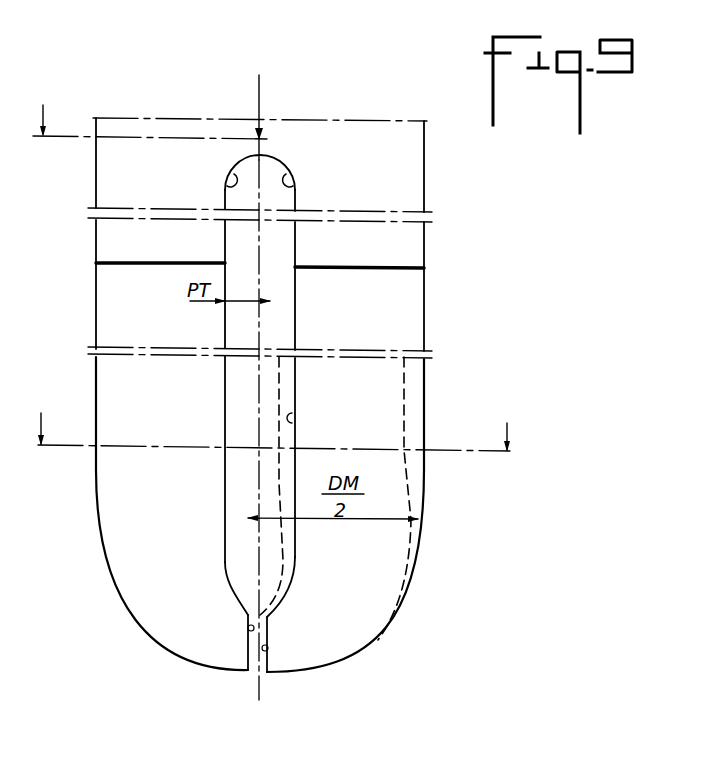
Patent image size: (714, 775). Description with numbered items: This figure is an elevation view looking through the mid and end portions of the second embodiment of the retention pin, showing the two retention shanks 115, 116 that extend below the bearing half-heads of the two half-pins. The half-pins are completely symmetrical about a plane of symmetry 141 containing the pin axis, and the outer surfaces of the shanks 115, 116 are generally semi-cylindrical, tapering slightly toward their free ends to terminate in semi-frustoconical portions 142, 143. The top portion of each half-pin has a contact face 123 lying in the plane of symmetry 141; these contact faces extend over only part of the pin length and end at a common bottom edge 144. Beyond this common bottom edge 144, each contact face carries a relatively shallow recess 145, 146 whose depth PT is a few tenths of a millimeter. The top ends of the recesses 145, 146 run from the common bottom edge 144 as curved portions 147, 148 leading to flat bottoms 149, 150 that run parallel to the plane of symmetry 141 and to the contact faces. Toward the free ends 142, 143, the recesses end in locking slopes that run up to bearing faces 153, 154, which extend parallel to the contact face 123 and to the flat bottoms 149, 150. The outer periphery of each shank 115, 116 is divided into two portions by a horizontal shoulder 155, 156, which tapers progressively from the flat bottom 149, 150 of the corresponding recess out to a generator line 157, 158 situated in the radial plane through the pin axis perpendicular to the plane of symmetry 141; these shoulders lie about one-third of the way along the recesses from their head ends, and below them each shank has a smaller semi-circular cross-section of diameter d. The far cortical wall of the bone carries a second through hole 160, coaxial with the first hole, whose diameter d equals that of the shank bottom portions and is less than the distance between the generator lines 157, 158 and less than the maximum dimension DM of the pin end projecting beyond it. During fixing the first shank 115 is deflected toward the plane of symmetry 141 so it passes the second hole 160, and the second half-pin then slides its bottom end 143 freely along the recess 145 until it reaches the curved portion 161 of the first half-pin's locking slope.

The retention shank 115 is at (112, 169).
The retention shank 116 is at (430, 177).
The contact face 123 is at (258, 148).
The plane of symmetry 141 is at (268, 400).
The semi-frustoconical portion 142 is at (133, 590).
The semi-frustoconical portion 143 is at (366, 624).
The common bottom edge 144 is at (262, 157).
The recess 145 is at (240, 246).
The recess 146 is at (285, 247).
The curved portion 147 is at (228, 184).
The curved portion 148 is at (292, 184).
The flat bottom 149 is at (224, 410).
The flat bottom 150 is at (292, 419).
The bearing face 153 is at (249, 629).
The bearing face 154 is at (268, 648).
The horizontal shoulder 155 is at (120, 265).
The horizontal shoulder 156 is at (390, 270).
The generator line 157 is at (96, 231).
The generator line 158 is at (424, 334).
The second through hole 160 is at (404, 422).
The curved portion 161 is at (225, 563).